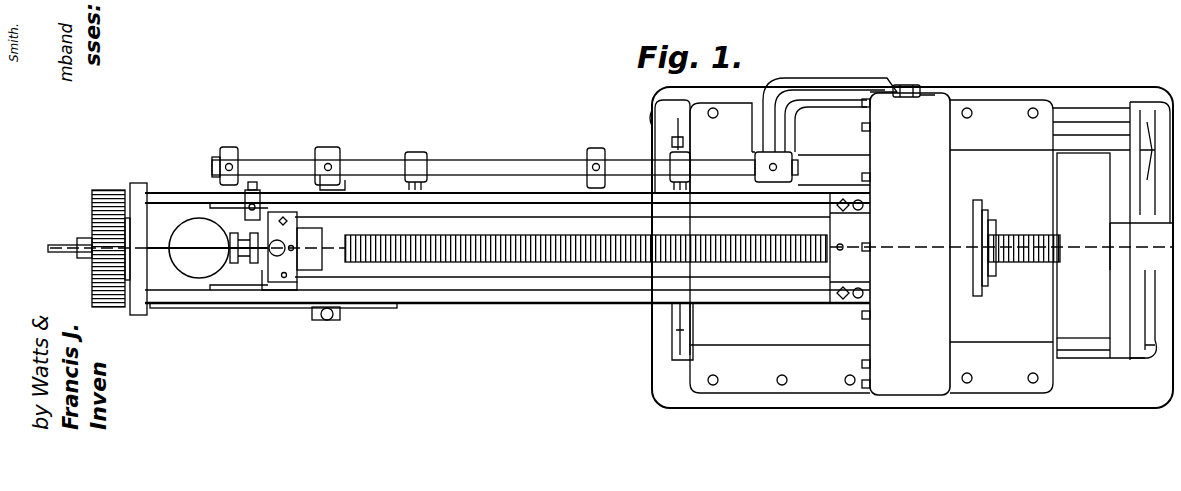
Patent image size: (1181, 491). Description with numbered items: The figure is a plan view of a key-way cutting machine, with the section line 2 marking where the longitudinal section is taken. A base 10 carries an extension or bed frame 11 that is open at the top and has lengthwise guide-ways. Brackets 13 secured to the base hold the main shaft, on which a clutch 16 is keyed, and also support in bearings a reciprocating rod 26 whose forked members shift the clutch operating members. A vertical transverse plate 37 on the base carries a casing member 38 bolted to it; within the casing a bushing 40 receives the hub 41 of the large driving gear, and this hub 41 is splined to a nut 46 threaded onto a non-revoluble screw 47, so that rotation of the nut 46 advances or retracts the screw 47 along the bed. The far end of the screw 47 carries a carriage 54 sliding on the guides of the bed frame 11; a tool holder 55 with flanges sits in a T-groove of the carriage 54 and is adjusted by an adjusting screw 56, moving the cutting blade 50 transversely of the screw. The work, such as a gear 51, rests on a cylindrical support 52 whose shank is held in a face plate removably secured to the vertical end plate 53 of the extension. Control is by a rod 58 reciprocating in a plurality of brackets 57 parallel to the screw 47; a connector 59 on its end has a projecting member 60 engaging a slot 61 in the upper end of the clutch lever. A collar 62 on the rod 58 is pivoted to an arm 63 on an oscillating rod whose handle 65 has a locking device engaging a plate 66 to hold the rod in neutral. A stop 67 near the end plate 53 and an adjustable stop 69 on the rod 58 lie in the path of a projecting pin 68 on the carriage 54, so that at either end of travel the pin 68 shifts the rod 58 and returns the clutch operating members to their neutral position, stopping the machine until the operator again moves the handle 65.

The section line 2— 2 is at (48, 248).
The base 10 is at (1000, 408).
The extension or bed frame 11 is at (492, 295).
The brackets 13 is at (680, 318).
The clutch 16 is at (1077, 333).
The reciprocating rod 26 is at (1085, 113).
The vertical transverse plate 37 is at (870, 141).
The casing member 38 is at (945, 142).
The bushing 40 is at (977, 204).
The hub 41 is at (985, 212).
The nut 46 is at (992, 222).
The screw 47 is at (427, 262).
The cutting blade 50 is at (60, 253).
The gear 51 is at (107, 192).
The cylindrical support 52 is at (80, 238).
The vertical end plate 53 is at (140, 188).
The carriage 54 is at (278, 282).
The tool holder 55 is at (247, 262).
The adjusting screw 56 is at (273, 253).
The brackets 57 is at (414, 158).
The rod 58 is at (492, 162).
The connector 59 is at (828, 84).
The projecting member 60 is at (906, 86).
The slot 61 is at (928, 90).
The collar 62 is at (330, 150).
The arm 63 is at (346, 186).
The handle 65 is at (327, 320).
The plate 66 is at (380, 309).
The stop 67 is at (228, 150).
The projecting pin 68 is at (254, 183).
The adjustable stop 69 is at (594, 150).